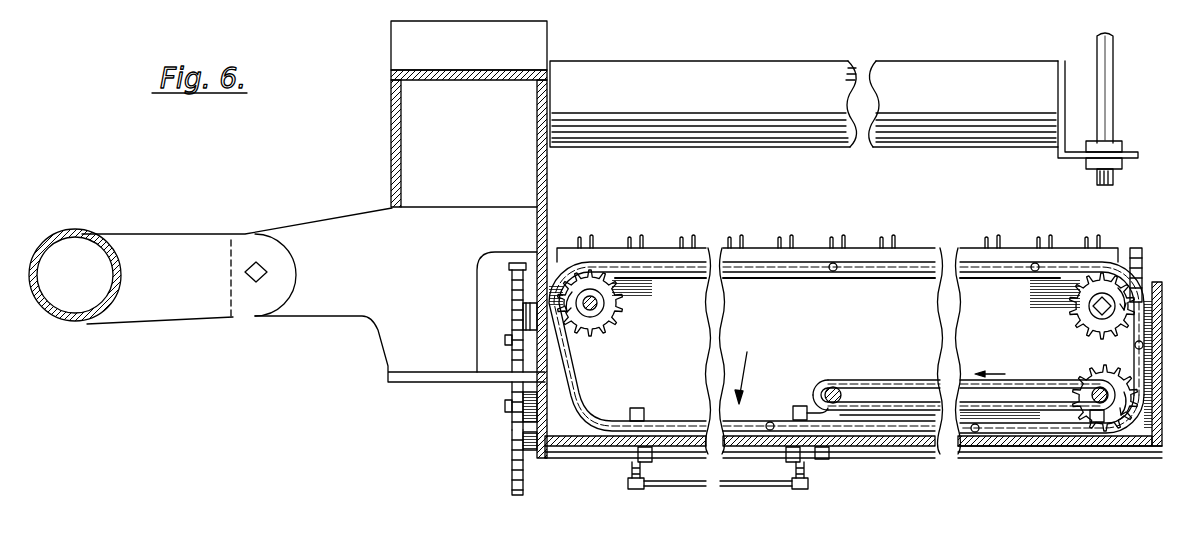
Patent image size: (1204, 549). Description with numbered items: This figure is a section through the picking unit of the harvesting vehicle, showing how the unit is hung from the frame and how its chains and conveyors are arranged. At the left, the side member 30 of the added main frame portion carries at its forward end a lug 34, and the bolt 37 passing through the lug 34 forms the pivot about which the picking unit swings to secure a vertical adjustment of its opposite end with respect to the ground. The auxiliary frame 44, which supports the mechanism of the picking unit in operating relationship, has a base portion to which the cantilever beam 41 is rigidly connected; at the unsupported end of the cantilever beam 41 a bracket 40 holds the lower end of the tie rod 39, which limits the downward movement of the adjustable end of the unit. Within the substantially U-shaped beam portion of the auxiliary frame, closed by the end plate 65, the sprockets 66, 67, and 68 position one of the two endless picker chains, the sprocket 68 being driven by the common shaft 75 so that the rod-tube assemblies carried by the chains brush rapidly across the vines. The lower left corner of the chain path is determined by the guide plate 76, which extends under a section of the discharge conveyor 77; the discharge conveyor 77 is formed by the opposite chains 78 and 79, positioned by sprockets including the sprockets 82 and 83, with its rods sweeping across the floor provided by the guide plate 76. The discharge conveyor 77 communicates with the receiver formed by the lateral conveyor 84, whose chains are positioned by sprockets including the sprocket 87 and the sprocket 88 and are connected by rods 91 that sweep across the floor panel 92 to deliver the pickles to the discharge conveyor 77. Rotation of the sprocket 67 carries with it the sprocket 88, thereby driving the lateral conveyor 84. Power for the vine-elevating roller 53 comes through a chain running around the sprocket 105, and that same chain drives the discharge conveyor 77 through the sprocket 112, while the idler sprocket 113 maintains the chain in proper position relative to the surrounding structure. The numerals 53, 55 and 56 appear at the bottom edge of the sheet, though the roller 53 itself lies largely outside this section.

The side member 30 is at (97, 236).
The lug 34 is at (177, 243).
The bolt 37 is at (255, 262).
The auxiliary frame 44 is at (391, 130).
The cantilever beam 41 is at (692, 61).
The tie rod 39 is at (1114, 84).
The bracket 40 is at (1065, 158).
The common shaft 75 is at (589, 294).
The sprocket 68 is at (602, 282).
The guide plate 76 is at (583, 384).
The discharge conveyor 77 is at (750, 368).
The sprocket 87 is at (837, 384).
The floor panel 92 is at (867, 381).
The lateral conveyor 84 is at (888, 381).
The rod 91 is at (910, 380).
The sprocket 67 is at (1083, 373).
The sprocket 66 is at (1068, 307).
The end plate 65 is at (1160, 356).
The sprocket 88 is at (1150, 443).
The sprocket 105 is at (512, 339).
The idler sprocket 113 is at (512, 393).
The sprocket 112 is at (511, 463).
The sprocket 83 is at (630, 468).
The chain 79 is at (636, 489).
The sprocket 82 is at (806, 470).
The chain 78 is at (804, 489).
The rod 56 is at (710, 548).
The vine-elevating roller 53 is at (634, 545).
The member 55 is at (759, 547).